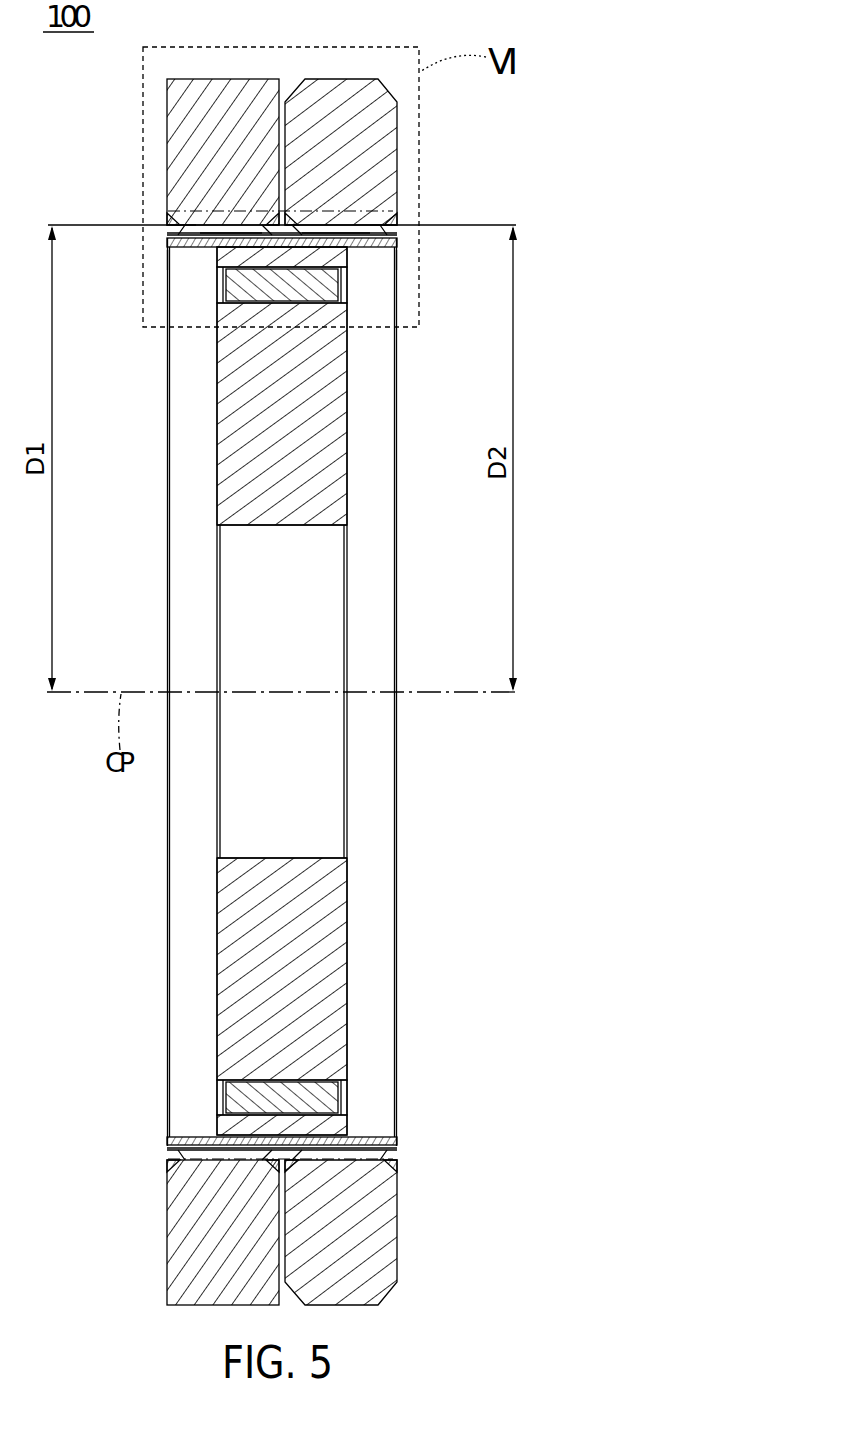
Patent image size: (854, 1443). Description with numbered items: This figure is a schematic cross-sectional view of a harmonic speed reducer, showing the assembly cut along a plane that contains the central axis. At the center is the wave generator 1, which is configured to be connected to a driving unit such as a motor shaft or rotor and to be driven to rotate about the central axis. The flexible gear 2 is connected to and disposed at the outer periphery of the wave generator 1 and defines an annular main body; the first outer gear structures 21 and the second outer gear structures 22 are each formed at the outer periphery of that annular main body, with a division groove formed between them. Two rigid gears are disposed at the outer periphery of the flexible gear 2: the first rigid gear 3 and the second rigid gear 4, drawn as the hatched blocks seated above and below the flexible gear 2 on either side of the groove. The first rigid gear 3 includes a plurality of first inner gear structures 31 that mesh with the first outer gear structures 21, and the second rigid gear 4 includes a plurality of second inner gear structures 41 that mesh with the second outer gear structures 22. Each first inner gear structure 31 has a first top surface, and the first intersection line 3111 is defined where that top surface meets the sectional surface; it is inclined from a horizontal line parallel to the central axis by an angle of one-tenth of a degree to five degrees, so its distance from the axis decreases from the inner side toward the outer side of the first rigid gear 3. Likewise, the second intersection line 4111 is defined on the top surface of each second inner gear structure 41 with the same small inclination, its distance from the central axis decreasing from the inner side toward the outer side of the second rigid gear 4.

The wave generator 1 is at (347, 1019).
The flexible gear 2 is at (351, 1159).
The first rigid gear 3 is at (170, 137).
The second rigid gear 4 is at (394, 126).
The first outer gear structures 21 is at (232, 232).
The second outer gear structures 22 is at (333, 228).
The first inner gear structures 31 is at (196, 222).
The second inner gear structures 41 is at (374, 220).
The first intersection line 3111 is at (176, 258).
The second intersection line 4111 is at (392, 257).